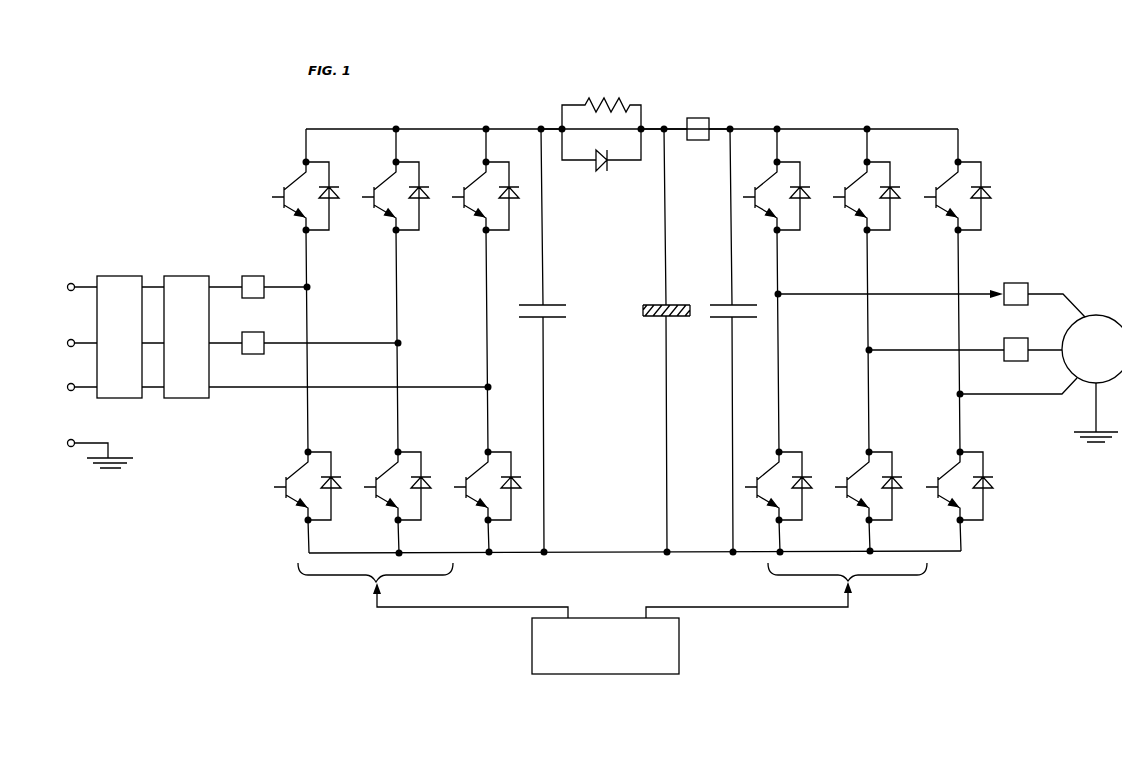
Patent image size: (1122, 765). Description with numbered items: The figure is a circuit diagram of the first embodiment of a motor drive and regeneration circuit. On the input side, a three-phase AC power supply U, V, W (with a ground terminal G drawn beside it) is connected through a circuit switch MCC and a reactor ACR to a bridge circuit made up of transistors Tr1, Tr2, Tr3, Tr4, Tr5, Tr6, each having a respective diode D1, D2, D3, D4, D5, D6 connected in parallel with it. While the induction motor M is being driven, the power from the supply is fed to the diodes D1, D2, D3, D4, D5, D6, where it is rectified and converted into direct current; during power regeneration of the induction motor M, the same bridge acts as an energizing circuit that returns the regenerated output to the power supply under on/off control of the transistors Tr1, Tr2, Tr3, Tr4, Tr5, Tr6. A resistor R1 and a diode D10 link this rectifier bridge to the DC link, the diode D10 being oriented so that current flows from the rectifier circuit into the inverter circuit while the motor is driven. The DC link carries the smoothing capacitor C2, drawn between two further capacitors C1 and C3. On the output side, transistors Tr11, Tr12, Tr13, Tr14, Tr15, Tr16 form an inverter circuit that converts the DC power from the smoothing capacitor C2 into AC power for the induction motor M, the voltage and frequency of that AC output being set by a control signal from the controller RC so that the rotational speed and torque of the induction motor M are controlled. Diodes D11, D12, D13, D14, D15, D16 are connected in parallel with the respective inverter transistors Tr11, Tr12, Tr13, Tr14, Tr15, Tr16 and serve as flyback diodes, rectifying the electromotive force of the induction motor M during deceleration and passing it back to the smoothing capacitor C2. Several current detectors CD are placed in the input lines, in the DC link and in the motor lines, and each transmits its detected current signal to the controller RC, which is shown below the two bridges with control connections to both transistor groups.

The three-phase AC power supply phase U is at (186, 278).
The three-phase AC power supply phase V is at (231, 334).
The three-phase AC power supply phase W is at (275, 378).
The ground terminal G is at (99, 445).
The circuit switch MCC is at (119, 285).
The reactor ACR is at (183, 285).
The current detector CD is at (635, 241).
The transistor Tr1 is at (289, 196).
The transistor Tr2 is at (291, 486).
The transistor Tr3 is at (379, 196).
The transistor Tr4 is at (381, 486).
The transistor Tr5 is at (469, 196).
The transistor Tr6 is at (471, 486).
The diode D1 is at (328, 196).
The diode D2 is at (330, 486).
The diode D3 is at (418, 196).
The diode D4 is at (420, 486).
The diode D5 is at (508, 196).
The diode D6 is at (510, 486).
The resistor R1 is at (601, 106).
The diode D10 is at (601, 161).
The smoothing capacitor C1 is at (544, 340).
The smoothing capacitor C2 is at (666, 340).
The smoothing capacitor C3 is at (733, 340).
The transistor Tr11 is at (759, 196).
The transistor Tr12 is at (760, 485).
The transistor Tr13 is at (848, 196).
The transistor Tr14 is at (848, 486).
The transistor Tr15 is at (938, 196).
The transistor Tr16 is at (939, 486).
The flyback diode D11 is at (805, 196).
The flyback diode D12 is at (806, 486).
The flyback diode D13 is at (895, 196).
The flyback diode D14 is at (896, 486).
The flyback diode D15 is at (986, 196).
The flyback diode D16 is at (988, 486).
The induction motor M is at (1092, 378).
The controller RC is at (679, 645).